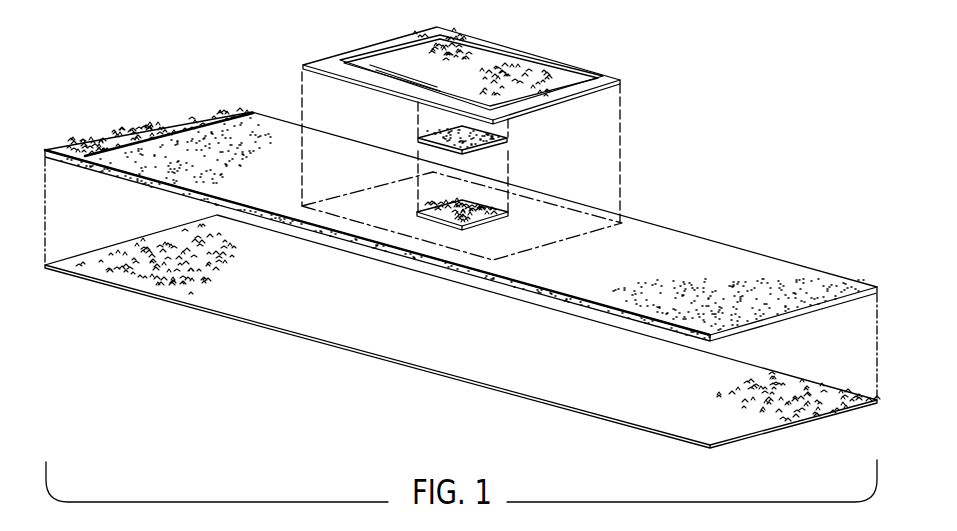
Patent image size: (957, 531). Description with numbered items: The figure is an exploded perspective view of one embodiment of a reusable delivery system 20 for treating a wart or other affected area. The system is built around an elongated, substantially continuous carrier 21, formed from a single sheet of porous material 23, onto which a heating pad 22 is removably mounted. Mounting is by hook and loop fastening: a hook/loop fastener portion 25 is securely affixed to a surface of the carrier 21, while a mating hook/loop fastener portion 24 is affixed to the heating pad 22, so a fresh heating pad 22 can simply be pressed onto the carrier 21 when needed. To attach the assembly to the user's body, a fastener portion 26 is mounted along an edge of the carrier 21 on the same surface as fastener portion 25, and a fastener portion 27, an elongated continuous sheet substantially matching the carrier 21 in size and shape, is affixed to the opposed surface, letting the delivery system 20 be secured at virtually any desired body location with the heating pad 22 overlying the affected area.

The delivery system 20 is at (245, 63).
The carrier 21 is at (760, 272).
The heating pad 22 is at (528, 63).
The porous material 23 is at (703, 247).
The hook and loop fastener portion 24 is at (494, 133).
The hook and loop fastener portion 25 is at (490, 206).
The fastener portion 26 is at (137, 127).
The fastener portion 27 is at (165, 296).